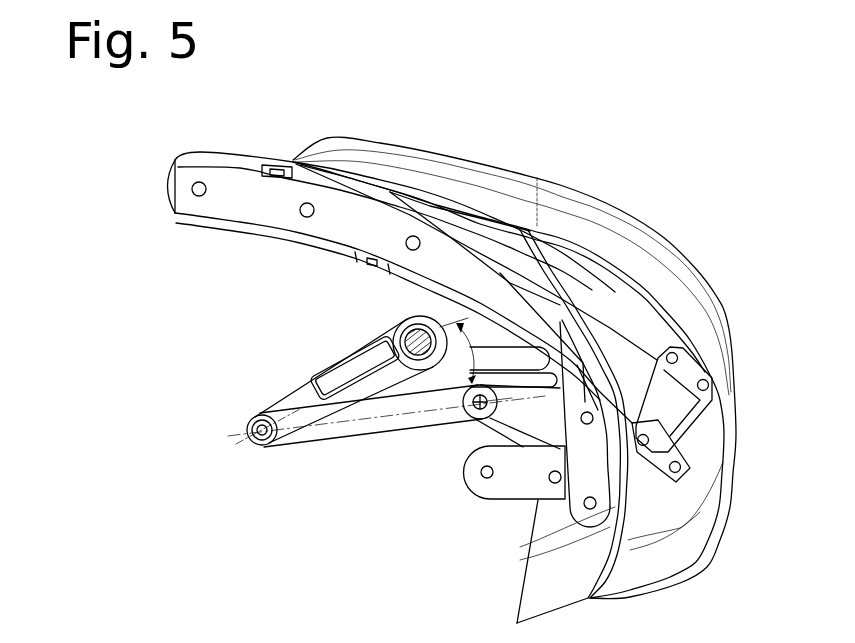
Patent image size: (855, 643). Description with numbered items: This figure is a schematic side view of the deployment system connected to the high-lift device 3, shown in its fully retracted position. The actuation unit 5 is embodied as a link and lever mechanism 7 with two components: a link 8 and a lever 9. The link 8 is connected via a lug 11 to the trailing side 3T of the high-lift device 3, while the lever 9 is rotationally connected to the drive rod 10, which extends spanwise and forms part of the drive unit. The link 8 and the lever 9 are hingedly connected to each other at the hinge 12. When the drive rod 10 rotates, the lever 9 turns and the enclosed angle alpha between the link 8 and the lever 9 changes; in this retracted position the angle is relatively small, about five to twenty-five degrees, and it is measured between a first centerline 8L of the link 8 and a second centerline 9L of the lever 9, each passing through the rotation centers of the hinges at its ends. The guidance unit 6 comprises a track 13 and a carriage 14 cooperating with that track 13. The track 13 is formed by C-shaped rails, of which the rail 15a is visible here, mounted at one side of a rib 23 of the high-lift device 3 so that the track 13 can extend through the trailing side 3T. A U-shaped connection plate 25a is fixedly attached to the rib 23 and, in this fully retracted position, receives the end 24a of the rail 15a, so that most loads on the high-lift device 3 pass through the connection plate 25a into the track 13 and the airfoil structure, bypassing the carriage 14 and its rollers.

The high-lift device 3 is at (572, 223).
The trailing side of the high-lift device 3T is at (554, 575).
The actuation unit 5 is at (353, 410).
The guidance unit 6 is at (369, 253).
The link and lever mechanism 7 is at (250, 452).
The link 8 is at (386, 453).
The first centerline 8L is at (360, 423).
The lever 9 is at (341, 368).
The second centerline 9L is at (363, 370).
The drive rod 10 is at (406, 330).
The lug 11 is at (473, 417).
The hinge 12 is at (260, 446).
The track 13 is at (184, 187).
The carriage 14 is at (236, 162).
The C-shaped rail 15a is at (226, 205).
The rib 23 is at (660, 507).
The end of the rail 24a is at (662, 397).
The U-shaped connection plate 25a is at (690, 460).